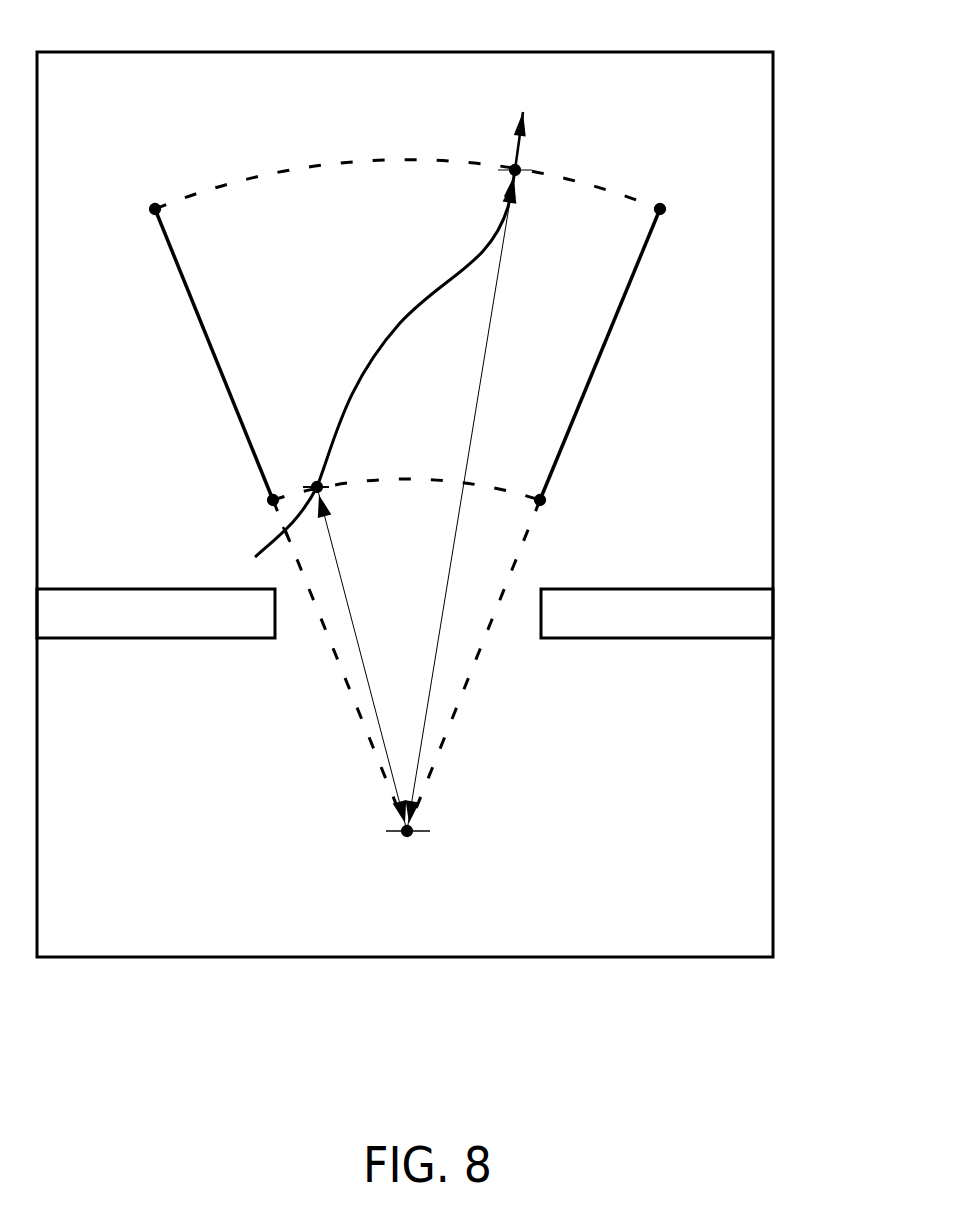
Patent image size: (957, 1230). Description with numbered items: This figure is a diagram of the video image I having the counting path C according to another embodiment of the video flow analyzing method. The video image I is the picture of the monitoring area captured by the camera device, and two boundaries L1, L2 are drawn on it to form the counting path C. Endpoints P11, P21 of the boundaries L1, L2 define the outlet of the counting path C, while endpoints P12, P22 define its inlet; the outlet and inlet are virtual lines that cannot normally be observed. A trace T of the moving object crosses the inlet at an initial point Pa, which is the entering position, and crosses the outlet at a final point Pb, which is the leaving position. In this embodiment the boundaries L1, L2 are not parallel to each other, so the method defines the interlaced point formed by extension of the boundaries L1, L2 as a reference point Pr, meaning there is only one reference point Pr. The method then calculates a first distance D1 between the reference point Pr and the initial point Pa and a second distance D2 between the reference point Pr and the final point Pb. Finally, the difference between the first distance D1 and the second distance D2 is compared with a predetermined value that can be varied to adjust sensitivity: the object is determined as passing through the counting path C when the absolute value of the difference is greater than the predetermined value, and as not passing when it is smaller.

The video image I is at (722, 52).
The counting path C is at (248, 240).
The boundary L1 is at (195, 305).
The boundary L2 is at (622, 305).
The endpoint P11 is at (127, 210).
The endpoint P12 is at (248, 489).
The endpoint P21 is at (690, 210).
The endpoint P22 is at (572, 489).
The initial point Pa is at (309, 469).
The final point Pb is at (502, 151).
The reference point Pr is at (408, 850).
The trace T is at (523, 125).
The first distance D1 is at (362, 659).
The second distance D2 is at (461, 500).